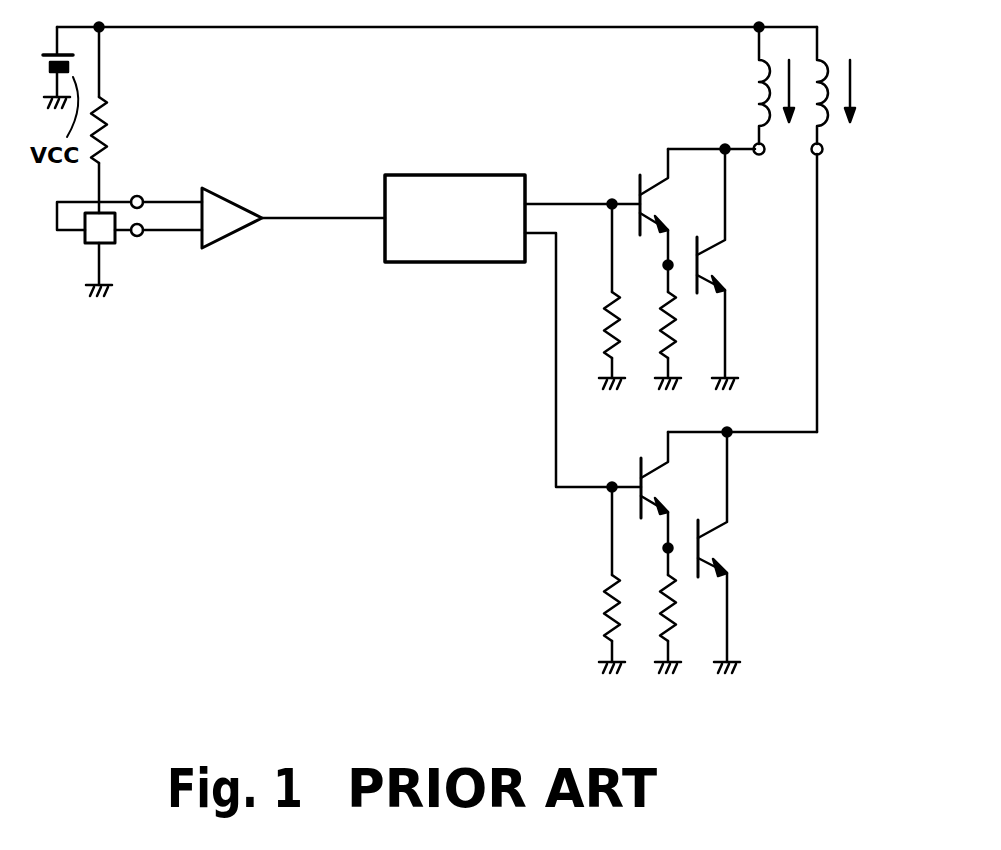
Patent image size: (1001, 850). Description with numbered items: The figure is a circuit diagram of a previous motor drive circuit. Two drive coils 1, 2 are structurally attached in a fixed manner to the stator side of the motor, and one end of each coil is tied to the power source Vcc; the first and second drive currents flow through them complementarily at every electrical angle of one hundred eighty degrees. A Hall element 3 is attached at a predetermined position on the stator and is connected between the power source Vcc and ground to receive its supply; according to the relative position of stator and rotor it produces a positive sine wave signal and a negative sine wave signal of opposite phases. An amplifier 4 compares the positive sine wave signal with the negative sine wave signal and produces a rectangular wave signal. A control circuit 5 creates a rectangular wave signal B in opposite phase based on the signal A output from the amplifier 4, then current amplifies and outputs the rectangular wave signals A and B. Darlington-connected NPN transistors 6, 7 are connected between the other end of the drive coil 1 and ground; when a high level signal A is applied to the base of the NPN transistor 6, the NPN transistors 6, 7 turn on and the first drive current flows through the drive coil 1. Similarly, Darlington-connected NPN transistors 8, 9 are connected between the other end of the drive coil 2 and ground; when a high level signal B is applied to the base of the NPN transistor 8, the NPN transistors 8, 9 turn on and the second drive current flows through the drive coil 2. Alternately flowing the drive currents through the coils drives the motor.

The drive coil 1 is at (760, 78).
The drive coil 2 is at (823, 59).
The Hall element 3 is at (87, 251).
The amplifier 4 is at (231, 200).
The control circuit 5 is at (453, 175).
The NPN transistor 6 is at (660, 203).
The NPN transistor 7 is at (719, 268).
The NPN transistor 8 is at (660, 485).
The NPN transistor 9 is at (720, 548).